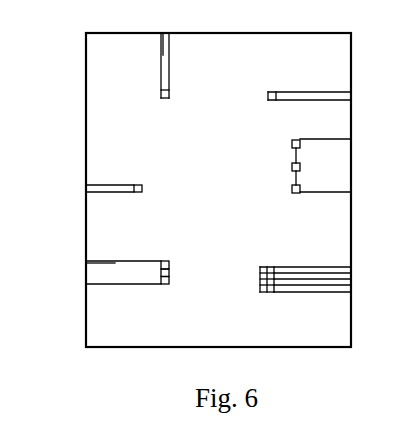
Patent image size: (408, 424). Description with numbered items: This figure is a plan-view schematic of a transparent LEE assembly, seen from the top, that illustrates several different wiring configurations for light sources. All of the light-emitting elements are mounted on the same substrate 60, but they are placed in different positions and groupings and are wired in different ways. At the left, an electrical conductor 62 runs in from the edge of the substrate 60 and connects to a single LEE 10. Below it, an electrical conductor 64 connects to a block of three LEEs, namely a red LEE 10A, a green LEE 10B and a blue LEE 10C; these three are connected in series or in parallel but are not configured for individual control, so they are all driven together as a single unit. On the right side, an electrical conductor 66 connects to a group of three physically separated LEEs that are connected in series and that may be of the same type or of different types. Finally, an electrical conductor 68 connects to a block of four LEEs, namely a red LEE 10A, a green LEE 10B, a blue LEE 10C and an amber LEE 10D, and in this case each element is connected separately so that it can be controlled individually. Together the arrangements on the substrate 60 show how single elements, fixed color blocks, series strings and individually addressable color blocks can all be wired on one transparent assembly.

The substrate 60 is at (85, 67).
The electrical conductor 62 is at (98, 183).
The electrical conductor 64 is at (95, 284).
The electrical conductor 66 is at (342, 193).
The electrical conductor 68 is at (340, 267).
The LEE 10 is at (142, 188).
The red LEE 10A is at (261, 268).
The green LEE 10B is at (262, 276).
The blue LEE 10C is at (261, 287).
The amber LEE 10D is at (274, 292).